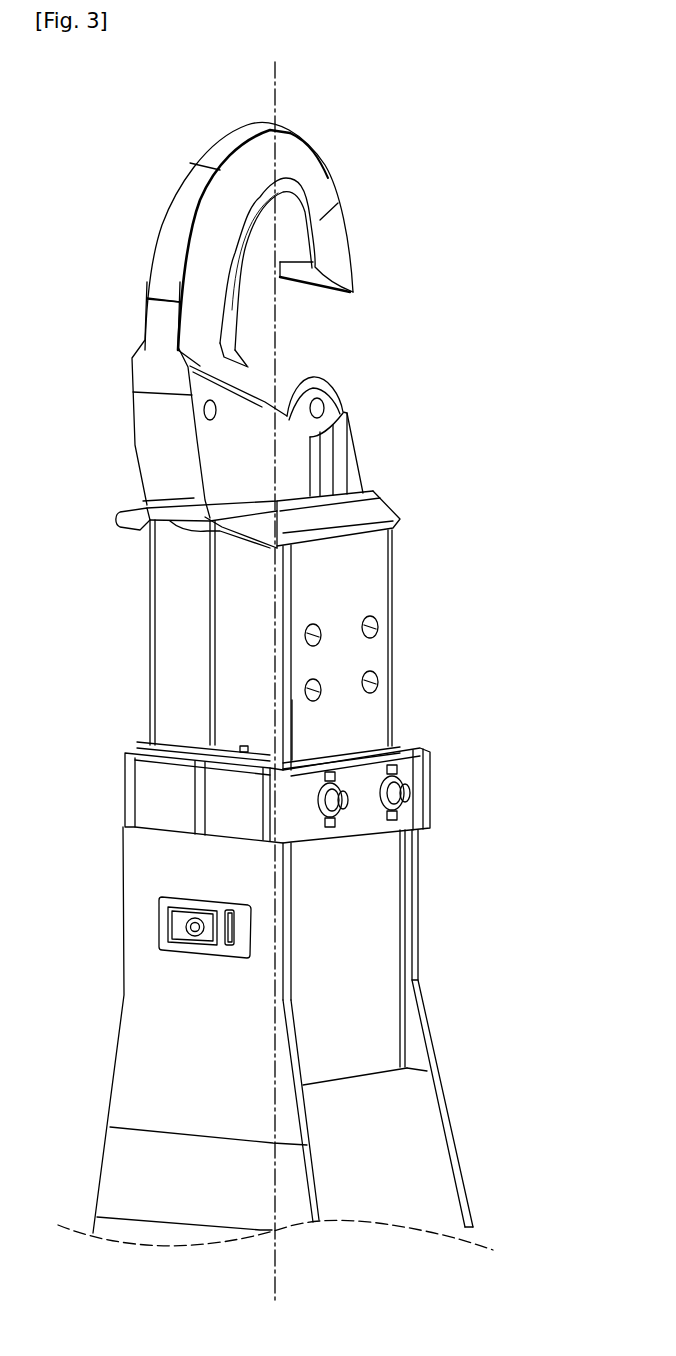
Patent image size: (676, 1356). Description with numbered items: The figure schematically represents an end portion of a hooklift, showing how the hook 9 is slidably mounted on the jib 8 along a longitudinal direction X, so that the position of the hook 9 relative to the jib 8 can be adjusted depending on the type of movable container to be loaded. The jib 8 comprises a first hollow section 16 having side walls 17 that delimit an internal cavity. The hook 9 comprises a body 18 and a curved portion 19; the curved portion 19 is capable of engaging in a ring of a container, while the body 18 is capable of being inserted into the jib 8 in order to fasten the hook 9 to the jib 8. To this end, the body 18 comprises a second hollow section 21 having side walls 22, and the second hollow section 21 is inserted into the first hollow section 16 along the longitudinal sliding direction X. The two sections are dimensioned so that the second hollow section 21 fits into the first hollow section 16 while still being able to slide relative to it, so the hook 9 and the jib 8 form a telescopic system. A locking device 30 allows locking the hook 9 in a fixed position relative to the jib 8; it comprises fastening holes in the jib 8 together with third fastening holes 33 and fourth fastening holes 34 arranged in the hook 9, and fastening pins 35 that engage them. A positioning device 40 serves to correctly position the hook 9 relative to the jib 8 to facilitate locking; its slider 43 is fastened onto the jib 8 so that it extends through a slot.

The jib 8 is at (81, 1167).
The hook 9 is at (217, 320).
The first hollow section 16 is at (362, 918).
The side walls 17 is at (352, 973).
The body 18 is at (144, 646).
The curved portion 19 is at (165, 205).
The second hollow section 21 is at (379, 650).
The side walls 22 is at (350, 727).
The locking device 30 is at (355, 788).
The third fastening holes 33 is at (333, 690).
The fourth fastening holes 34 is at (333, 635).
The fastening pins 35 is at (356, 803).
The positioning device 40 is at (186, 1030).
The slider 43 is at (183, 927).
The longitudinal direction X is at (278, 78).